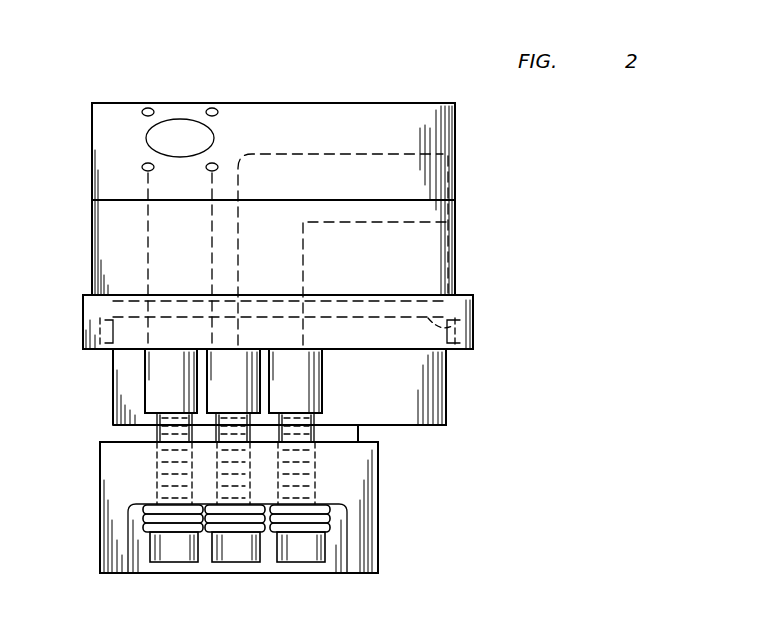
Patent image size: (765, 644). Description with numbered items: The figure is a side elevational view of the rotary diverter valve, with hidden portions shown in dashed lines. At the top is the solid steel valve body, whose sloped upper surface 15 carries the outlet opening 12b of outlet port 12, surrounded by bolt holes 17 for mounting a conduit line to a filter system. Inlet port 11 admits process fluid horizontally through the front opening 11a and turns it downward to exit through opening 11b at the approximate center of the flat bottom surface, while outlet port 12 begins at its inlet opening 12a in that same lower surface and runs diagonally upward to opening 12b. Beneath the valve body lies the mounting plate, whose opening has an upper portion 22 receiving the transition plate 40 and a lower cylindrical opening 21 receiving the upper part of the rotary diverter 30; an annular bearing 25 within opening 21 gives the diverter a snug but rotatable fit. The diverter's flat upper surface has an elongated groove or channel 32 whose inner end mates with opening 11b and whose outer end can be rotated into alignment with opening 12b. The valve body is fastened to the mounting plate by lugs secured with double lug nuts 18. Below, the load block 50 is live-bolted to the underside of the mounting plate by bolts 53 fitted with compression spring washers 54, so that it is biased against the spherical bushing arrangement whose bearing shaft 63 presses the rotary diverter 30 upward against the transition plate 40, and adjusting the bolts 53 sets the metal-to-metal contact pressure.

The inlet port 11 is at (375, 162).
The opening of inlet port 11a is at (457, 172).
The opening of inlet port 11b is at (265, 306).
The outlet port 12 is at (158, 194).
The inlet opening of outlet port 12a is at (188, 304).
The outlet opening of outlet port 12b is at (205, 138).
The sloped upper surface 15 is at (332, 122).
The bolt holes 17 is at (211, 163).
The double lug nuts 18 is at (228, 399).
The cylindrical opening 21 is at (462, 320).
The upper portion of opening 22 is at (462, 343).
The annular bearing 25 is at (83, 330).
The rotary diverter 30 is at (437, 385).
The elongated groove or channel 32 is at (223, 333).
The transition plate 40 is at (367, 317).
The load block 50 is at (357, 519).
The bolt 53 is at (297, 550).
The compression spring washer 54 is at (235, 506).
The bearing shaft 63 is at (112, 434).